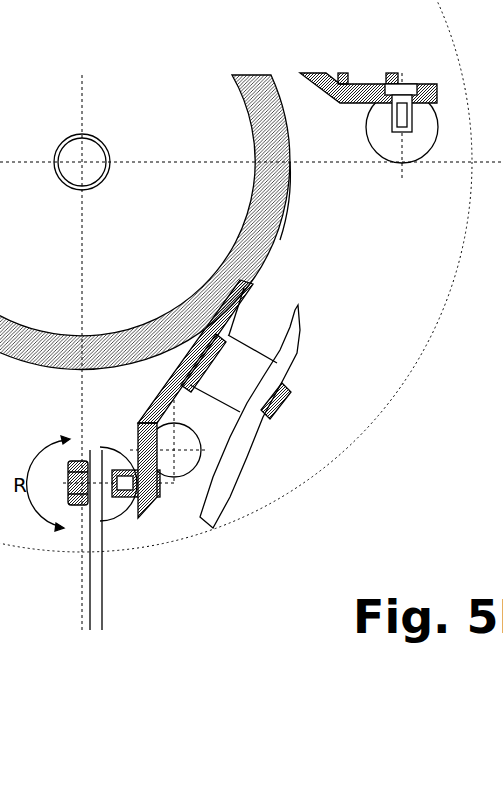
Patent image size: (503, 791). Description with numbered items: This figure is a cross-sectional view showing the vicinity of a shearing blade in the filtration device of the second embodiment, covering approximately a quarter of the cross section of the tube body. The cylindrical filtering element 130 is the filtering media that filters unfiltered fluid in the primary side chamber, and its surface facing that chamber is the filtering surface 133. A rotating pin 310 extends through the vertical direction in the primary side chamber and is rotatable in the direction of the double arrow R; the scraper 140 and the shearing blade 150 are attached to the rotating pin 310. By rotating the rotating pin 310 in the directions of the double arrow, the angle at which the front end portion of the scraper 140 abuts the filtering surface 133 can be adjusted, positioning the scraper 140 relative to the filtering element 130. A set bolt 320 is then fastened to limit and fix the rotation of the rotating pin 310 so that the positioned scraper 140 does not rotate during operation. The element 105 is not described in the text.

The rotation shaft 105 is at (70, 175).
The filtering element 130 is at (273, 148).
The filtering surface 133 is at (286, 212).
The scraper 140 is at (256, 304).
The shearing blade 150 is at (320, 356).
The rotating pin 310 is at (413, 137).
The set bolt 320 is at (180, 478).